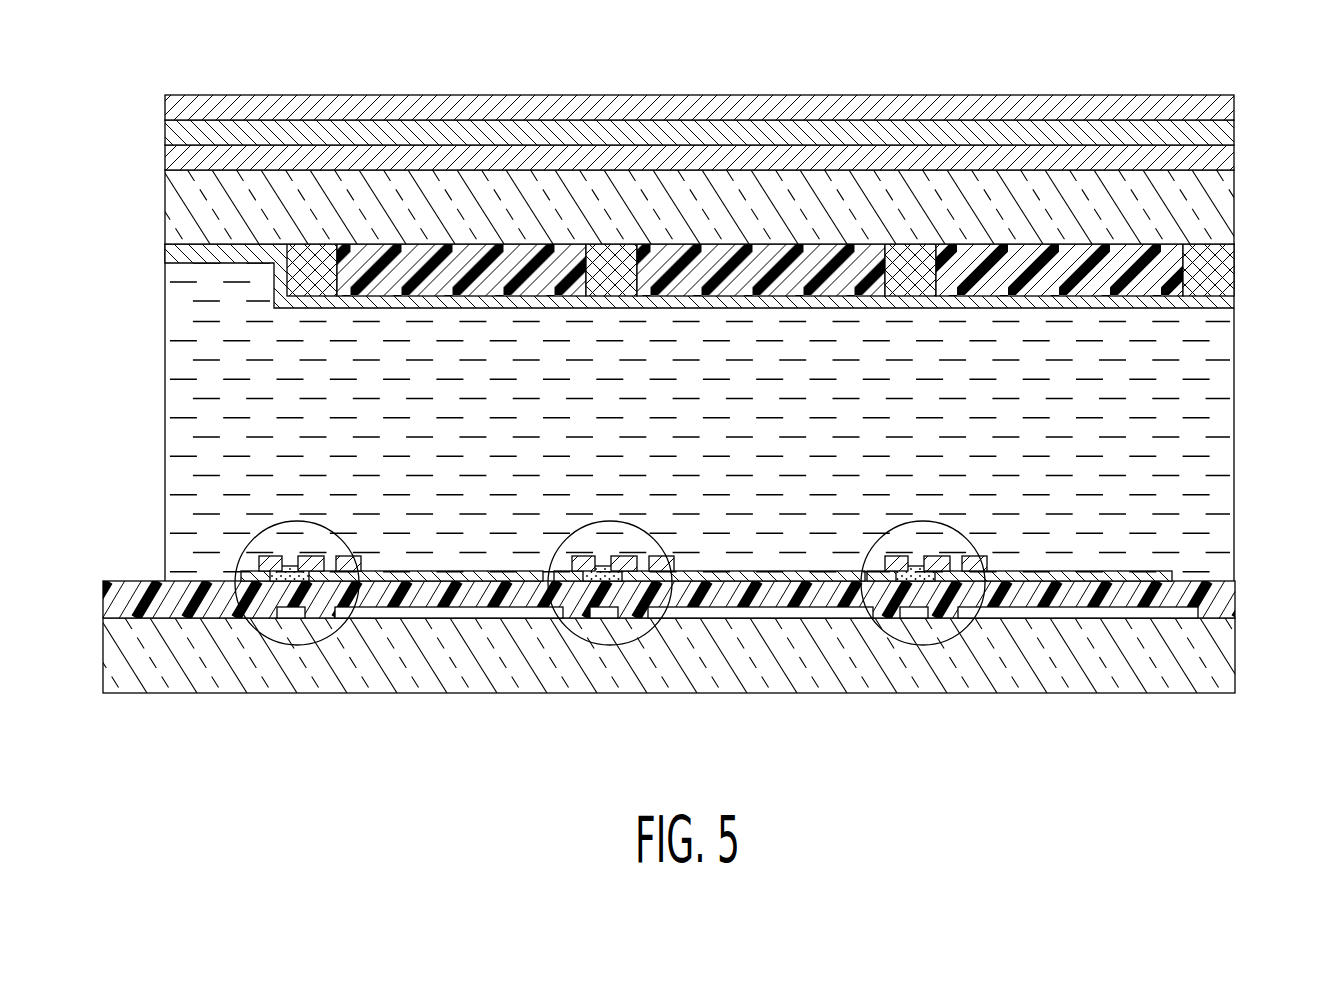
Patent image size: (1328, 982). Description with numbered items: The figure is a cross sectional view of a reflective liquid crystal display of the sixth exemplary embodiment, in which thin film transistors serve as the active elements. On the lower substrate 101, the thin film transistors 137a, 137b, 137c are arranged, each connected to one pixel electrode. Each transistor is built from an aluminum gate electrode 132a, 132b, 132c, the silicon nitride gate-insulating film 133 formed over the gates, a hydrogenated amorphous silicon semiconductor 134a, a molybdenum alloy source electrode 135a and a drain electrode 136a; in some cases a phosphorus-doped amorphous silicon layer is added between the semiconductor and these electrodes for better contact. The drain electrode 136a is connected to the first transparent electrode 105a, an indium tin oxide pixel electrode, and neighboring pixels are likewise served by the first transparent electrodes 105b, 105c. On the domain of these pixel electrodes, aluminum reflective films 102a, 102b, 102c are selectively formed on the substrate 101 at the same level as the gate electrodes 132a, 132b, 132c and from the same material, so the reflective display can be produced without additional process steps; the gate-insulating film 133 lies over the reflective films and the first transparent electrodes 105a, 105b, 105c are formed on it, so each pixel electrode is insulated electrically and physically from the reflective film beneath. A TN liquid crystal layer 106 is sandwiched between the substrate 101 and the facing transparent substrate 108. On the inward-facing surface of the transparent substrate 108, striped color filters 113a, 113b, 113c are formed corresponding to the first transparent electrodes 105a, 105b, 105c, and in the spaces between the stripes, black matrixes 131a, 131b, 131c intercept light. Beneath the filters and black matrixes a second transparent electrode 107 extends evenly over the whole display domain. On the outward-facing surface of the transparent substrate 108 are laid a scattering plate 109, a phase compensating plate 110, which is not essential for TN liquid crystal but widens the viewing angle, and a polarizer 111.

The substrate 101 is at (1228, 650).
The reflective film 102a is at (462, 620).
The reflective film 102b is at (767, 620).
The reflective film 102c is at (1072, 620).
The first transparent electrode 105a is at (482, 571).
The first transparent electrode 105b is at (818, 571).
The first transparent electrode 105c is at (1150, 571).
The liquid crystal layer 106 is at (1213, 414).
The second transparent electrode 107 is at (1234, 302).
The transparent substrate 108 is at (1234, 206).
The scattering plate 109 is at (1234, 156).
The phase compensating plate 110 is at (1234, 132).
The polarizer 111 is at (1234, 95).
The color filter 113a is at (448, 244).
The color filter 113b is at (747, 244).
The color filter 113c is at (1018, 244).
The black matrix 131a is at (317, 244).
The black matrix 131b is at (612, 244).
The black matrix 131c is at (902, 244).
The gate electrode 132a is at (294, 620).
The gate electrode 132b is at (603, 620).
The gate electrode 132c is at (910, 620).
The gate-insulating film 133 is at (1225, 603).
The semiconductor 134a is at (288, 566).
The source electrode 135a is at (260, 553).
The drain electrode 136a is at (344, 557).
The thin film transistor 137a is at (243, 643).
The thin film transistor 137b is at (646, 514).
The thin film transistor 137c is at (958, 514).